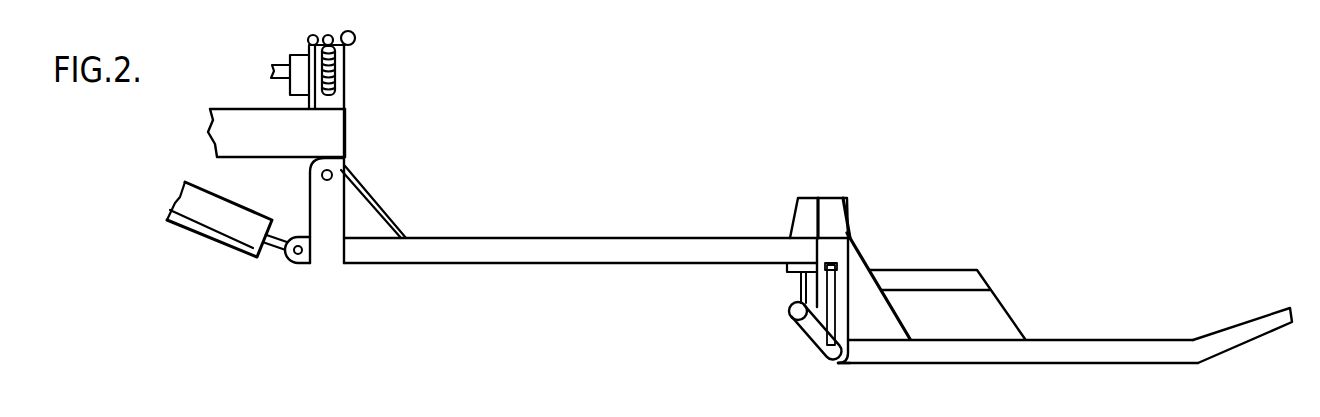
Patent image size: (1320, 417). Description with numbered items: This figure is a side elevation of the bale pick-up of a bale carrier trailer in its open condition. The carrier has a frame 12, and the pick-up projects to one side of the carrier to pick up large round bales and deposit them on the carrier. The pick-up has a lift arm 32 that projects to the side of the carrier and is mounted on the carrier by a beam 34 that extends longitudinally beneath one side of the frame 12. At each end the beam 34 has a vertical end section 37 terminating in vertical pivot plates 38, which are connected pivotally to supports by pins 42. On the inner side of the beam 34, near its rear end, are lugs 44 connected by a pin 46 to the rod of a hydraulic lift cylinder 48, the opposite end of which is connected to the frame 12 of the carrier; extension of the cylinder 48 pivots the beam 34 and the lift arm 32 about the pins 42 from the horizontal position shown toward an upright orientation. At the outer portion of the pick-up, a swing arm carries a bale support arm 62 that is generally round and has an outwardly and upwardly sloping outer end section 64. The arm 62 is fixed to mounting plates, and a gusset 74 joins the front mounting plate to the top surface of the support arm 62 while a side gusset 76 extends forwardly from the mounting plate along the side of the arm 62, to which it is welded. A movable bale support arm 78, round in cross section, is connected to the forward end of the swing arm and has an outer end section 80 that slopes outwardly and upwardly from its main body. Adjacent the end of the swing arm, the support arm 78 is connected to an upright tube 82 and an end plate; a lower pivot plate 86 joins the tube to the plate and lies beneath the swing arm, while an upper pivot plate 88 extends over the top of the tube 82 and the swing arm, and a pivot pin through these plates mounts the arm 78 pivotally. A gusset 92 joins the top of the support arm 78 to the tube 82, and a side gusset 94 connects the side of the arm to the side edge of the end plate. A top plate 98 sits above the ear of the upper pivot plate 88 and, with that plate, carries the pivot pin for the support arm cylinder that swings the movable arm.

The frame 12 is at (648, 416).
The lift arm 32 is at (583, 237).
The beam 34 is at (335, 253).
The vertical end section 37 is at (338, 212).
The vertical pivot plates 38 is at (347, 166).
The pins 42 is at (347, 136).
The lugs 44 is at (301, 265).
The pin 46 is at (293, 257).
The hydraulic lift cylinder 48 is at (203, 237).
The bale support arm 62 is at (1103, 342).
The outer end section 64 is at (1243, 328).
The gusset 74 is at (868, 283).
The side gusset 76 is at (995, 308).
The movable bale support arm 78 is at (837, 362).
The outer end section 80 is at (802, 330).
The upright tube 82 is at (848, 253).
The lower pivot plate 86 is at (793, 280).
The upper pivot plate 88 is at (800, 232).
The gusset 92 is at (848, 307).
The side gusset 94 is at (800, 288).
The top plate 98 is at (832, 198).